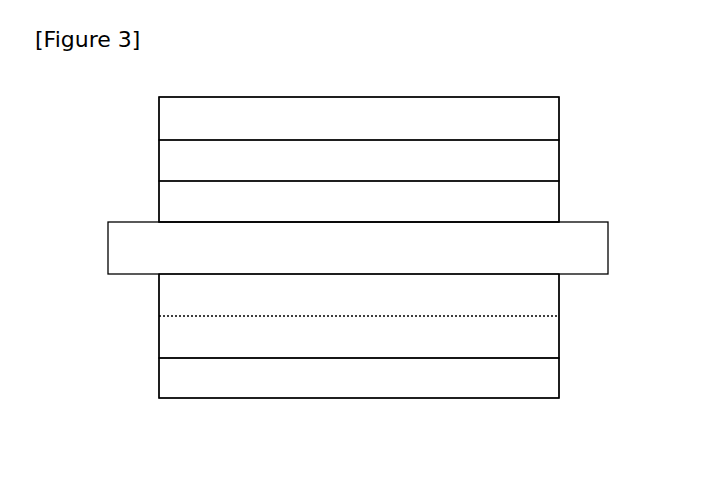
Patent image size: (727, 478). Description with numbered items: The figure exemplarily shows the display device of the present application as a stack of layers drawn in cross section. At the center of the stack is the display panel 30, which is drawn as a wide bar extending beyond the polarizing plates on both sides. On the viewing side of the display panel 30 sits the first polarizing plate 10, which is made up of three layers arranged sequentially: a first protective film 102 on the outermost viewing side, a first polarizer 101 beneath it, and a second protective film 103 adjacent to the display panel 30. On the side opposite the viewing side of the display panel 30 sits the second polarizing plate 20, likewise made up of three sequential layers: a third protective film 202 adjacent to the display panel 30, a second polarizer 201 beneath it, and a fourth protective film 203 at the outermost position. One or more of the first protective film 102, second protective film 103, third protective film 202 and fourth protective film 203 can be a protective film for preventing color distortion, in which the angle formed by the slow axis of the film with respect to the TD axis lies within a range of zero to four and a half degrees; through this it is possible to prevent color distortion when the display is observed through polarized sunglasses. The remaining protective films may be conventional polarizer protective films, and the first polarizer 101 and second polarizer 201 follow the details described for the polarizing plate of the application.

The first polarizing plate 10 is at (159, 97).
The first polarizer 101 is at (562, 155).
The first protective film 102 is at (562, 112).
The second protective film 103 is at (562, 195).
The second polarizing plate 20 is at (159, 274).
The second polarizer 201 is at (562, 332).
The third protective film 202 is at (562, 291).
The fourth protective film 203 is at (562, 374).
The display panel 30 is at (108, 245).